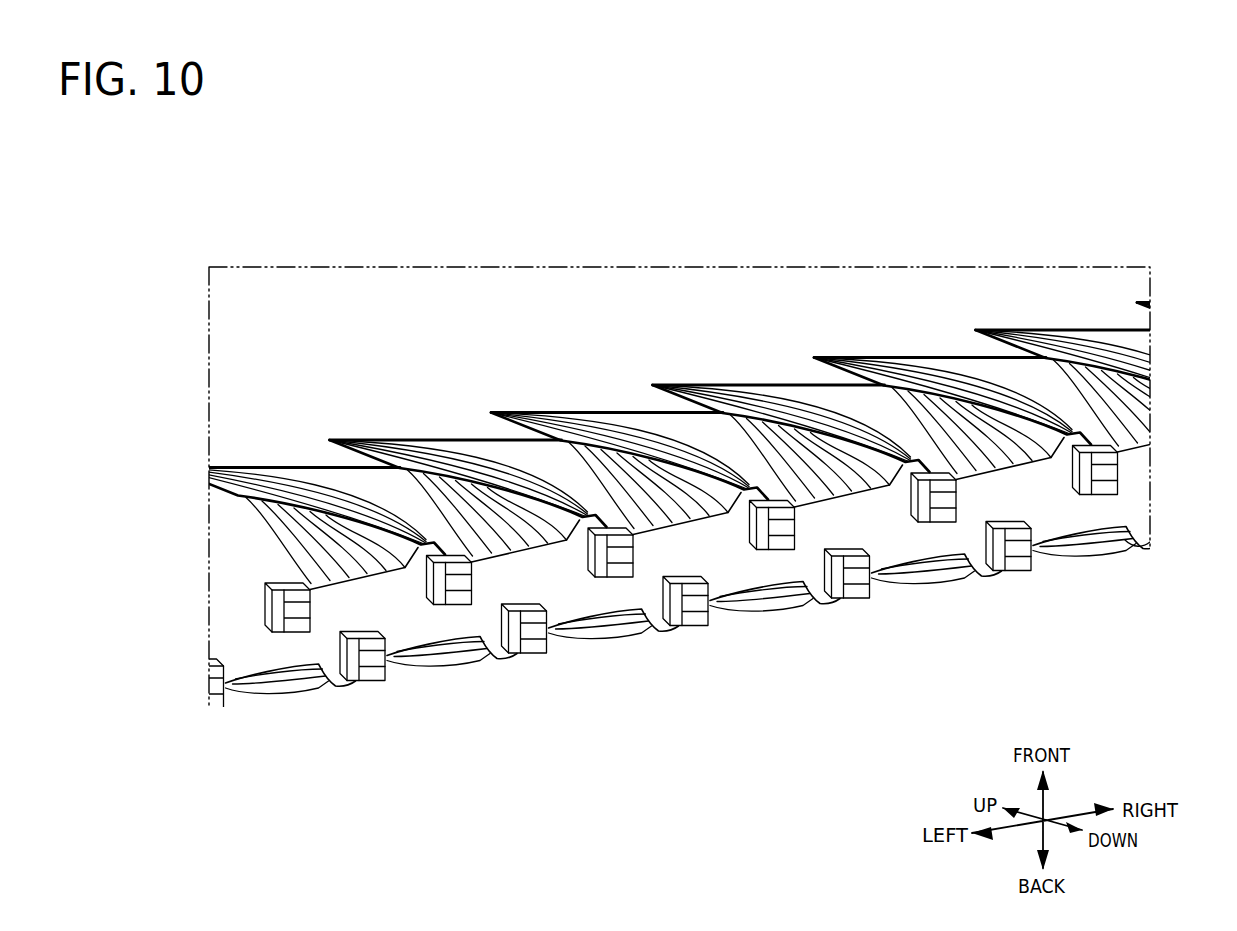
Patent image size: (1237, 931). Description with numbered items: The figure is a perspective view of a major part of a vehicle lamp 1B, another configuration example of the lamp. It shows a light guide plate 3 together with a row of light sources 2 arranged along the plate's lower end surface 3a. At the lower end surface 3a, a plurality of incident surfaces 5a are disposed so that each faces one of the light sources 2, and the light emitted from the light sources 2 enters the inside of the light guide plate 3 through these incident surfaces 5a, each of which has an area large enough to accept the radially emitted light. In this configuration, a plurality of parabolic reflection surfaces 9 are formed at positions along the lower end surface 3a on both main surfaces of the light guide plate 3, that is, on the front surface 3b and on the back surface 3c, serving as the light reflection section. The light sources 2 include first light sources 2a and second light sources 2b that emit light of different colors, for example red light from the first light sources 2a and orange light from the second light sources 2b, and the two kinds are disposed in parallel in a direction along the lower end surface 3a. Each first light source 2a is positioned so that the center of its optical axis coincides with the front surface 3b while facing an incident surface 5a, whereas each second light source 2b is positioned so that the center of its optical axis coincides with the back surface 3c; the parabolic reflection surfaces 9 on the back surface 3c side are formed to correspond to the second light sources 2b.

The vehicle lamp 1B is at (906, 229).
The light guide plate 3 is at (568, 320).
The lower end surface 3a is at (1128, 500).
The front surface 3b is at (335, 572).
The back surface 3c is at (270, 681).
The parabolic reflection surface 9 is at (935, 405).
The incident surface 5a is at (1075, 438).
The light source 2 is at (1130, 630).
The first light source 2a is at (1105, 483).
The second light source 2b is at (1020, 552).